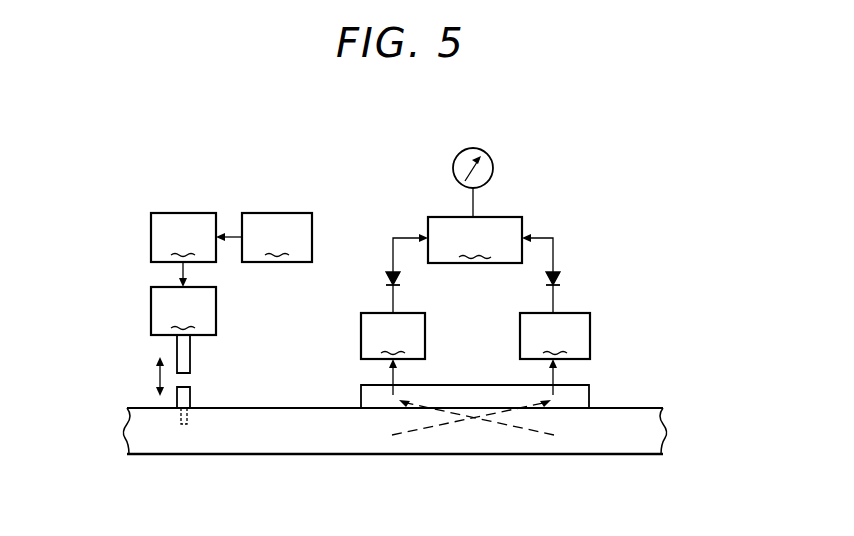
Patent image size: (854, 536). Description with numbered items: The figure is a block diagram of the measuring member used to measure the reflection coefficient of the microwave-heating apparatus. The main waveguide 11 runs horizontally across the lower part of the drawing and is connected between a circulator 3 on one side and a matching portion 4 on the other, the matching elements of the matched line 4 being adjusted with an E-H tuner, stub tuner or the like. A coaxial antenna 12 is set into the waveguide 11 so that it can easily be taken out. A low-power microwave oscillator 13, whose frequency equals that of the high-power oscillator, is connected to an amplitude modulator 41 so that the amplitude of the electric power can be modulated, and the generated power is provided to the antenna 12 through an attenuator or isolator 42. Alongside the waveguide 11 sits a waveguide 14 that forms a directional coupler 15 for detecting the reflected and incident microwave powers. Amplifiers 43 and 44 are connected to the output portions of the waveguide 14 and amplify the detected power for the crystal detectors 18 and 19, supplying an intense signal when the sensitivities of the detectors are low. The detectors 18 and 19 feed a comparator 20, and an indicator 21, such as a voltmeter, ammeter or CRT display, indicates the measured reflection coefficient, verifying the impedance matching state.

The circulator 3 is at (97, 428).
The matching portion 4 is at (698, 432).
The waveguide 11 is at (296, 422).
The coaxial antenna 12 is at (188, 418).
The low-power microwave oscillator 13 is at (183, 250).
The waveguide 14 is at (463, 390).
The directional coupler 15 is at (600, 392).
The crystal detector 18 is at (386, 278).
The crystal detector 19 is at (560, 278).
The comparator 20 is at (475, 240).
The indicator 21 is at (490, 157).
The amplitude modulator 41 is at (264, 237).
The attenuator 42 is at (183, 311).
The amplifier 43 is at (393, 354).
The amplifier 44 is at (555, 354).